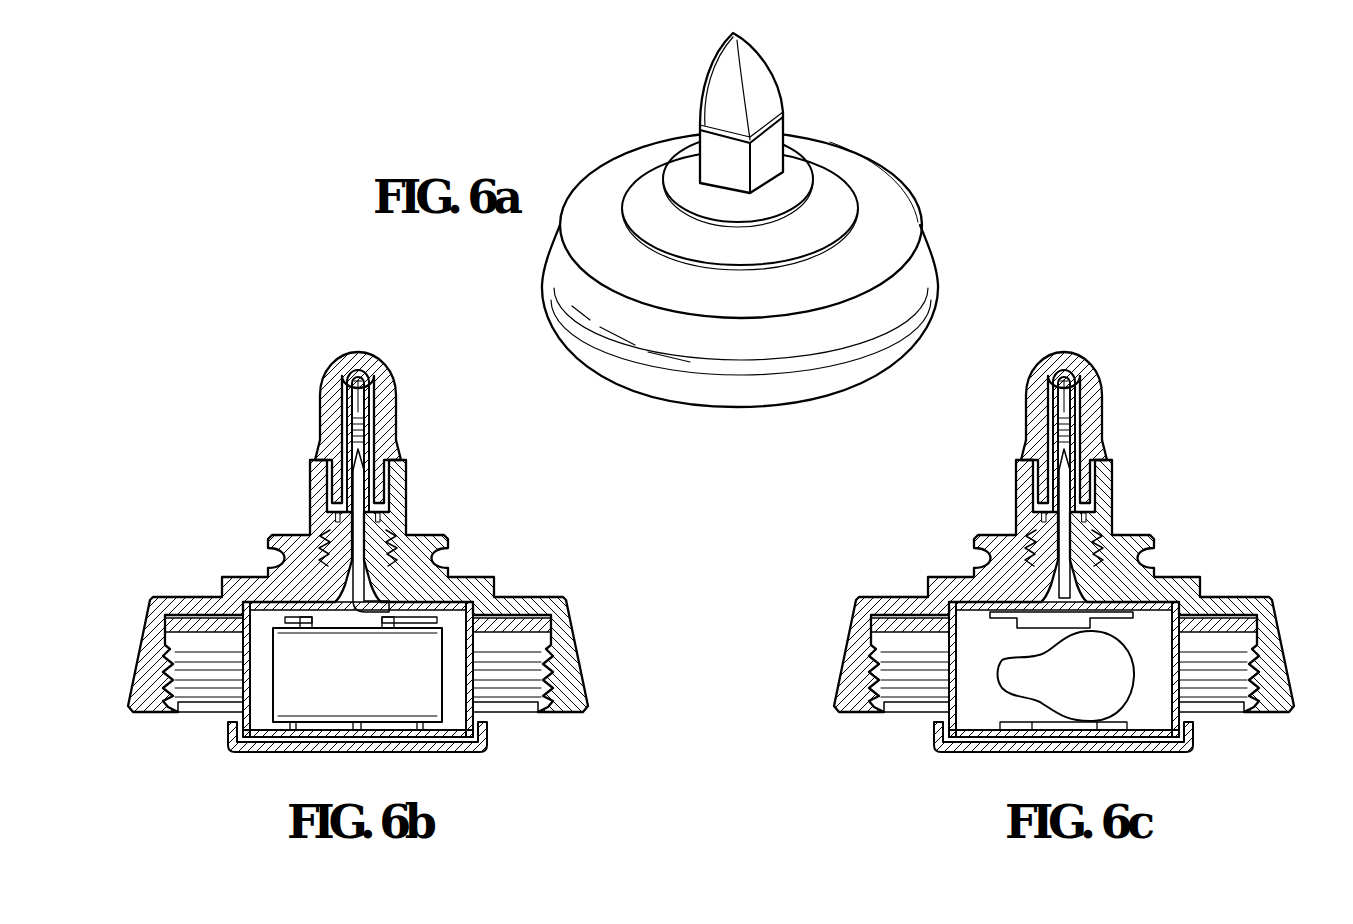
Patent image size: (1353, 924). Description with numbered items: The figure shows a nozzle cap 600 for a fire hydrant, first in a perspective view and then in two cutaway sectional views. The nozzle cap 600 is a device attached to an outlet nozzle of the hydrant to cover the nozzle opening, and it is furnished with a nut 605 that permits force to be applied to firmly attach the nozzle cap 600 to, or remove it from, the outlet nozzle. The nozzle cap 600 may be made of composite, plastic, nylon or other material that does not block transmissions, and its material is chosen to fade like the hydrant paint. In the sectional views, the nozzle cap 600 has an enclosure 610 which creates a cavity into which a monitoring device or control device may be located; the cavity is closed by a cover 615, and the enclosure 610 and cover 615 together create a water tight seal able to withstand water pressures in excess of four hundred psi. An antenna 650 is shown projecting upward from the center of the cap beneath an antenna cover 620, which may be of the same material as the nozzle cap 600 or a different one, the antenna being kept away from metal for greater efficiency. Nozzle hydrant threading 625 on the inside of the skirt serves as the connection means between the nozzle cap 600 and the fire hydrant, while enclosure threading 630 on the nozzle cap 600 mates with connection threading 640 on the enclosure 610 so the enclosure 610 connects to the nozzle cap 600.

In FIG. 6A, the nozzle cap 600 is at (588, 131).
In FIG. 6B, the nozzle cap 600 is at (242, 469).
In FIG. 6C, the nozzle cap 600 is at (1041, 564).
In FIG. 6A, the nut 605 is at (722, 157).
In FIG. 6B, the enclosure 610 is at (458, 683).
In FIG. 6C, the enclosure 610 is at (1133, 695).
In FIG. 6B, the cover 615 is at (352, 743).
In FIG. 6C, the cover 615 is at (1063, 755).
In FIG. 6B, the antenna cover 620 is at (393, 405).
In FIG. 6C, the antenna cover 620 is at (1140, 427).
In FIG. 6B, the nozzle hydrant threading 625 is at (165, 670).
In FIG. 6C, the nozzle hydrant threading 625 is at (1011, 660).
In FIG. 6B, the enclosure threading 630 is at (428, 559).
In FIG. 6C, the enclosure threading 630 is at (1064, 586).
In FIG. 6B, the connection threading 640 is at (333, 538).
In FIG. 6C, the connection threading 640 is at (1015, 531).
In FIG. 6B, the antenna 650 is at (357, 428).
In FIG. 6C, the antenna 650 is at (1021, 469).